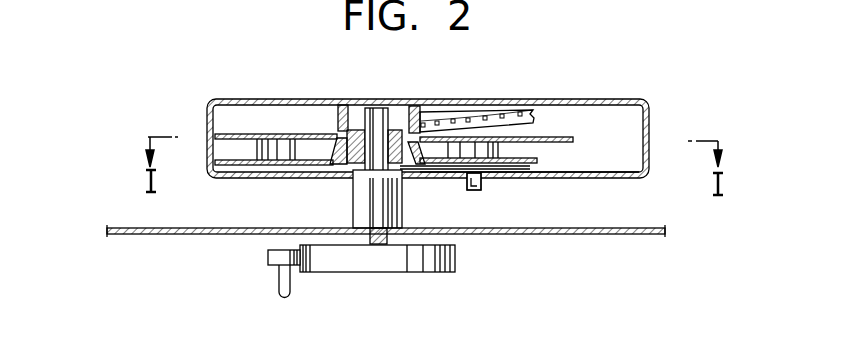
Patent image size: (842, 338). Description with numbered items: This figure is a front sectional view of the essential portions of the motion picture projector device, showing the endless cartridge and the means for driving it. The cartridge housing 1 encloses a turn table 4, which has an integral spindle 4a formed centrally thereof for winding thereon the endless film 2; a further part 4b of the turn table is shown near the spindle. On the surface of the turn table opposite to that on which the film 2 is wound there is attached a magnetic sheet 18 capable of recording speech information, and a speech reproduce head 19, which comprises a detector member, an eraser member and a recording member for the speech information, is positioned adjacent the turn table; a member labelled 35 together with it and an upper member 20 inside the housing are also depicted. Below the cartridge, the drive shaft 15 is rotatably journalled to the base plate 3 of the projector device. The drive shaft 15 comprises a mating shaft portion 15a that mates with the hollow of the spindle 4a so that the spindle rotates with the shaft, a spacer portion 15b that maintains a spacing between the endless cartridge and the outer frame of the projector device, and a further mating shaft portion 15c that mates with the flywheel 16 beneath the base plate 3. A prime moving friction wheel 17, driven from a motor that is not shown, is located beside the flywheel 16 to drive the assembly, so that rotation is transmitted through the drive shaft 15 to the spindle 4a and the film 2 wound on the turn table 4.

The cartridge housing 1 is at (303, 99).
The film 2 is at (273, 155).
The base plate 3 is at (612, 228).
The turn table 4 is at (298, 165).
The spindle 4a is at (335, 165).
The hub 4b is at (354, 90).
The drive shaft 15 is at (371, 99).
The mating shaft portion 15a is at (435, 90).
The spacer portion 15b is at (449, 224).
The mating shaft portion 15c is at (375, 244).
The flywheel 16 is at (440, 256).
The prime moving friction wheel 17 is at (268, 258).
The magnetic sheet 18 is at (548, 178).
The speech reproduce head 19 is at (474, 190).
The upper plate 20 is at (266, 134).
The stop block 35 is at (506, 198).